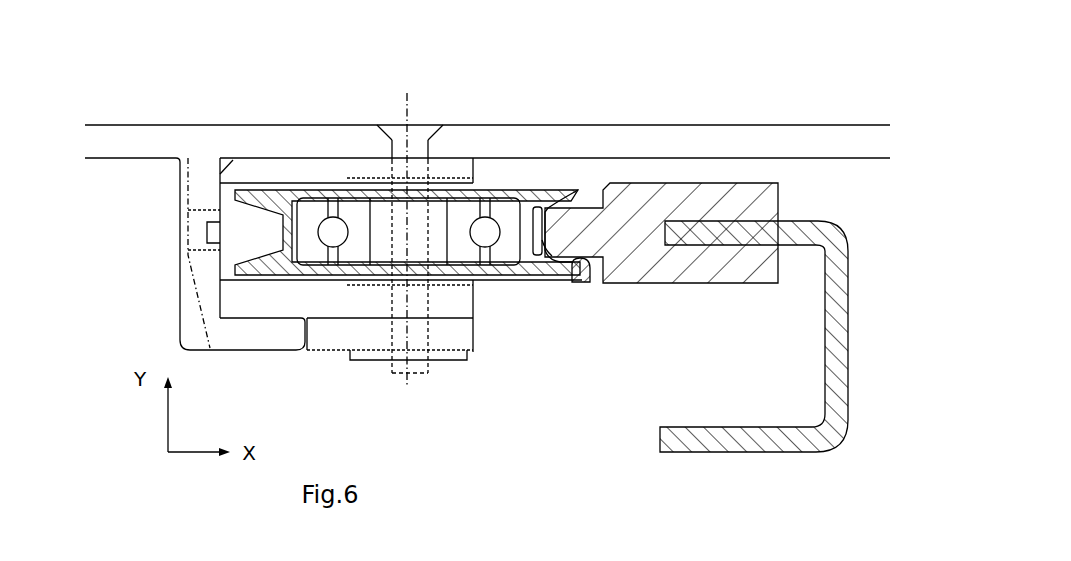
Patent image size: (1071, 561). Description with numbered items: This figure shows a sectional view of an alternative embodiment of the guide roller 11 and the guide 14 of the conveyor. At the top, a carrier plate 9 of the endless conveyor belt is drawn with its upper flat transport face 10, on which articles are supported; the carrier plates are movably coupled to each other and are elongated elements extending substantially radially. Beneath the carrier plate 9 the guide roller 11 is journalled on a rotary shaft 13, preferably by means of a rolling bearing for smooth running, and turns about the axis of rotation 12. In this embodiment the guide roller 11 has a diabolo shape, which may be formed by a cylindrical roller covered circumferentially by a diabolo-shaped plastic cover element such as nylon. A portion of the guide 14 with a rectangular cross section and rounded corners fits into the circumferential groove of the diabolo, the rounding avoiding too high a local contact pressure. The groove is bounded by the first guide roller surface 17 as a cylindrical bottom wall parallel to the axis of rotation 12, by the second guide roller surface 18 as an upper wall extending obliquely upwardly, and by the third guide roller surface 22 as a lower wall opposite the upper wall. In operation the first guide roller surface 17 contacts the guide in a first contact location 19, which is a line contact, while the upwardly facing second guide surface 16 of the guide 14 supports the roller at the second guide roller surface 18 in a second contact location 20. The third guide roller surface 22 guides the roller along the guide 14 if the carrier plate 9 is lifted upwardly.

The carrier plate 9 is at (229, 122).
The upper flat transport face 10 is at (177, 123).
The guide roller 11 is at (309, 208).
The axis of rotation 12 is at (408, 118).
The rotary shaft 13 is at (397, 147).
The guide 14 is at (660, 273).
The second guide surface 16 is at (551, 207).
The first guide roller surface 17 is at (550, 250).
The second guide roller surface 18 is at (583, 204).
The first contact location 19 is at (537, 247).
The second contact location 20 is at (538, 207).
The third guide roller surface 22 is at (588, 267).